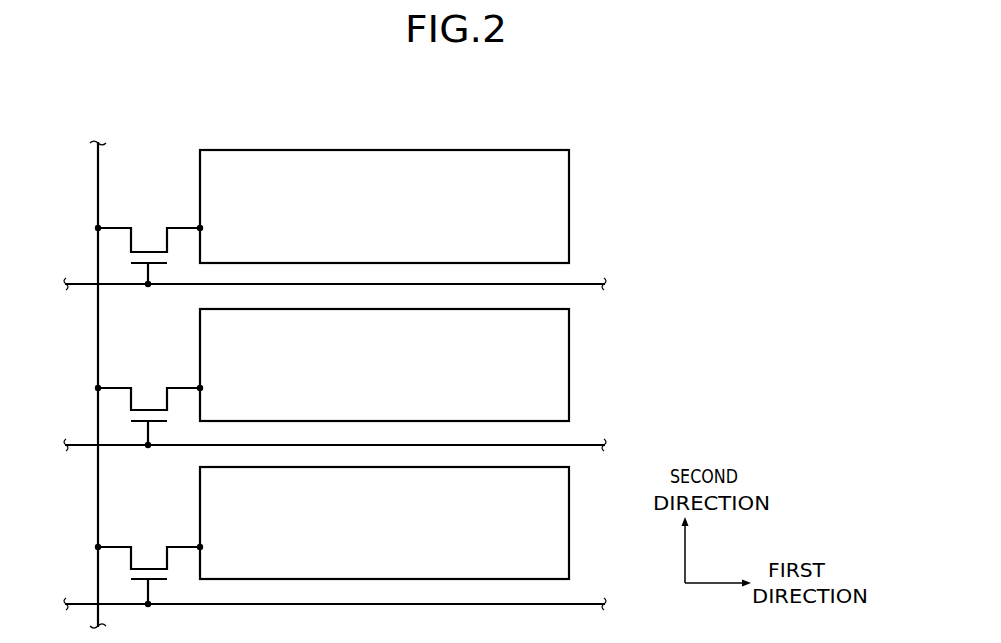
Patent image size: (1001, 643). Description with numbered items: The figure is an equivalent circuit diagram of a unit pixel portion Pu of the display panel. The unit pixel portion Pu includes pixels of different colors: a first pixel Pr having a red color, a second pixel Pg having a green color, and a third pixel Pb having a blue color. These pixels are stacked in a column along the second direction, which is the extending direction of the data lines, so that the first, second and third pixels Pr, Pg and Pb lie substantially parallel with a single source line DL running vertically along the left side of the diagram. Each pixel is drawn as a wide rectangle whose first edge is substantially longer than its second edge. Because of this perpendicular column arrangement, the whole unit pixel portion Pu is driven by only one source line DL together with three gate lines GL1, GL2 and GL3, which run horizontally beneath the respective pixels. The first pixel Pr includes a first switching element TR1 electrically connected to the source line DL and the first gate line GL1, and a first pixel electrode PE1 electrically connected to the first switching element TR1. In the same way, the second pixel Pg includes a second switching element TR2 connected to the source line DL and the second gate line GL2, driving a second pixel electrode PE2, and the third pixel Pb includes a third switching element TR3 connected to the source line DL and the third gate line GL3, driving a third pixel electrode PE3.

The unit pixel portion Pu is at (388, 100).
The source line DL is at (98, 370).
The first gate line GL1 is at (359, 285).
The second gate line GL2 is at (359, 445).
The third gate line GL3 is at (359, 605).
The first switching element TR1 is at (149, 245).
The second switching element TR2 is at (149, 405).
The third switching element TR3 is at (149, 563).
The first pixel electrode PE1 is at (418, 206).
The second pixel electrode PE2 is at (418, 365).
The third pixel electrode PE3 is at (418, 523).
The first pixel Pr is at (395, 208).
The second pixel Pg is at (397, 371).
The third pixel Pb is at (397, 527).